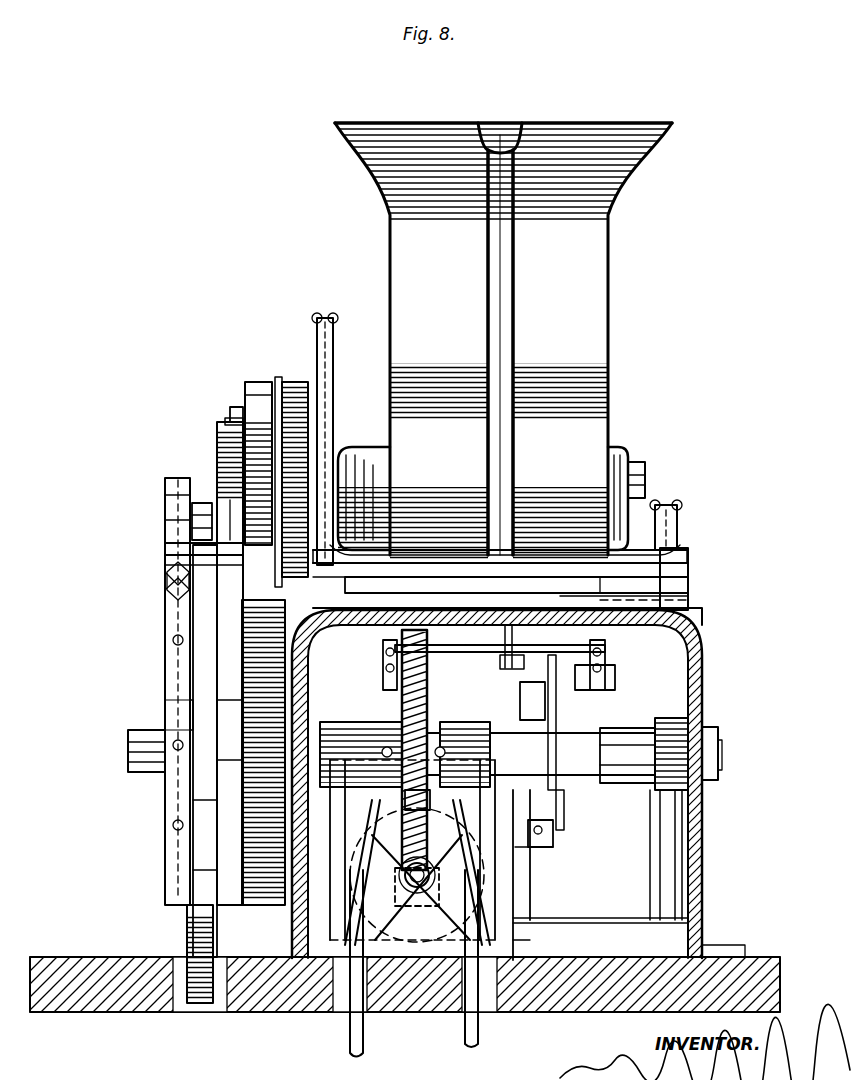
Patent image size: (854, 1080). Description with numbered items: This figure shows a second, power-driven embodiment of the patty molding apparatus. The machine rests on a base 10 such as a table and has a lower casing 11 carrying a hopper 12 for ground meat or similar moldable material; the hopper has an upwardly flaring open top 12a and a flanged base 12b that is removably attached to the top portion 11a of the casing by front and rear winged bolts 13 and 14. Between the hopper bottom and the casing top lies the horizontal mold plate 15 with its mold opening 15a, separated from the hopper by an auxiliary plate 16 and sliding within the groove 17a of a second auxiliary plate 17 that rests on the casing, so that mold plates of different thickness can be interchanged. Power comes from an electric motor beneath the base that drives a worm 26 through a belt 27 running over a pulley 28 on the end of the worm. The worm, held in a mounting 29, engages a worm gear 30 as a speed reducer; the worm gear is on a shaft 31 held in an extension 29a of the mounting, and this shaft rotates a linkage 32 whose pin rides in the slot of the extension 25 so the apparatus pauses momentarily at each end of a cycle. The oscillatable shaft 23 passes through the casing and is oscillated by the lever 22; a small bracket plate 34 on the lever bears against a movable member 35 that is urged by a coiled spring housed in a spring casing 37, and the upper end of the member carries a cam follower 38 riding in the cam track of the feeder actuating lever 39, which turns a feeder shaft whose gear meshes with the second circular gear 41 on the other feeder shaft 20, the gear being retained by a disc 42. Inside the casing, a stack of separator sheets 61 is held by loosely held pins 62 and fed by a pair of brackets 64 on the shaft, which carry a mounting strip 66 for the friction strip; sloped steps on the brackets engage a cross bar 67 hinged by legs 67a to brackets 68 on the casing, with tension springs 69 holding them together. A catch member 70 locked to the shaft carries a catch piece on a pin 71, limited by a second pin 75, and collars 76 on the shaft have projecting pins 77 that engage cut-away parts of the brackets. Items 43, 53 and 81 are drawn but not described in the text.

The base 10 is at (85, 1000).
The lower casing 11 is at (694, 680).
The top portion of the casing 11a is at (695, 613).
The hopper 12 is at (596, 295).
The upwardly flaring open top 12a is at (598, 125).
The flanged base 12b is at (665, 553).
The front winged bolt 13 is at (333, 345).
The rear winged bolt 14 is at (675, 520).
The mold plate 15 is at (685, 585).
The mold opening 15a is at (690, 602).
The auxiliary plate 16 is at (683, 566).
The second auxiliary plate 17 is at (690, 604).
The groove 17a is at (662, 596).
The feeder shaft 20 is at (634, 468).
The lever 22 is at (168, 480).
The shaft 23 is at (718, 740).
The extension 25 is at (188, 932).
The worm 26 is at (445, 840).
The belt 27 is at (360, 1040).
The pulley 28 is at (390, 862).
The mounting 29 is at (470, 872).
The extension of the mounting 29a is at (328, 740).
The worm gear 30 is at (360, 872).
The shaft 31 is at (140, 772).
The linkage 32 is at (205, 866).
The bracket plate 34 is at (166, 603).
The movable member 35 is at (226, 430).
The spring casing 37 is at (260, 900).
The cam follower 38 is at (236, 407).
The feeder actuating lever 39 is at (258, 383).
The second circular gear 41 is at (295, 385).
The disc 42 is at (278, 378).
The clutch block 43 is at (203, 503).
The cap 53 is at (230, 420).
The stack of separator sheets 61 is at (625, 725).
The loosely held pins 62 is at (600, 812).
The brackets 64 is at (420, 660).
The mounting strip 66 is at (612, 680).
The cross bar 67 is at (510, 625).
The legs 67a is at (527, 647).
The brackets 68 is at (500, 639).
The tension springs 69 is at (614, 657).
The catch member 70 is at (472, 700).
The pin 71 is at (530, 722).
The second pin 75 is at (428, 800).
The collars 76 is at (556, 800).
The pin 77 is at (570, 810).
The collar 81 is at (168, 716).